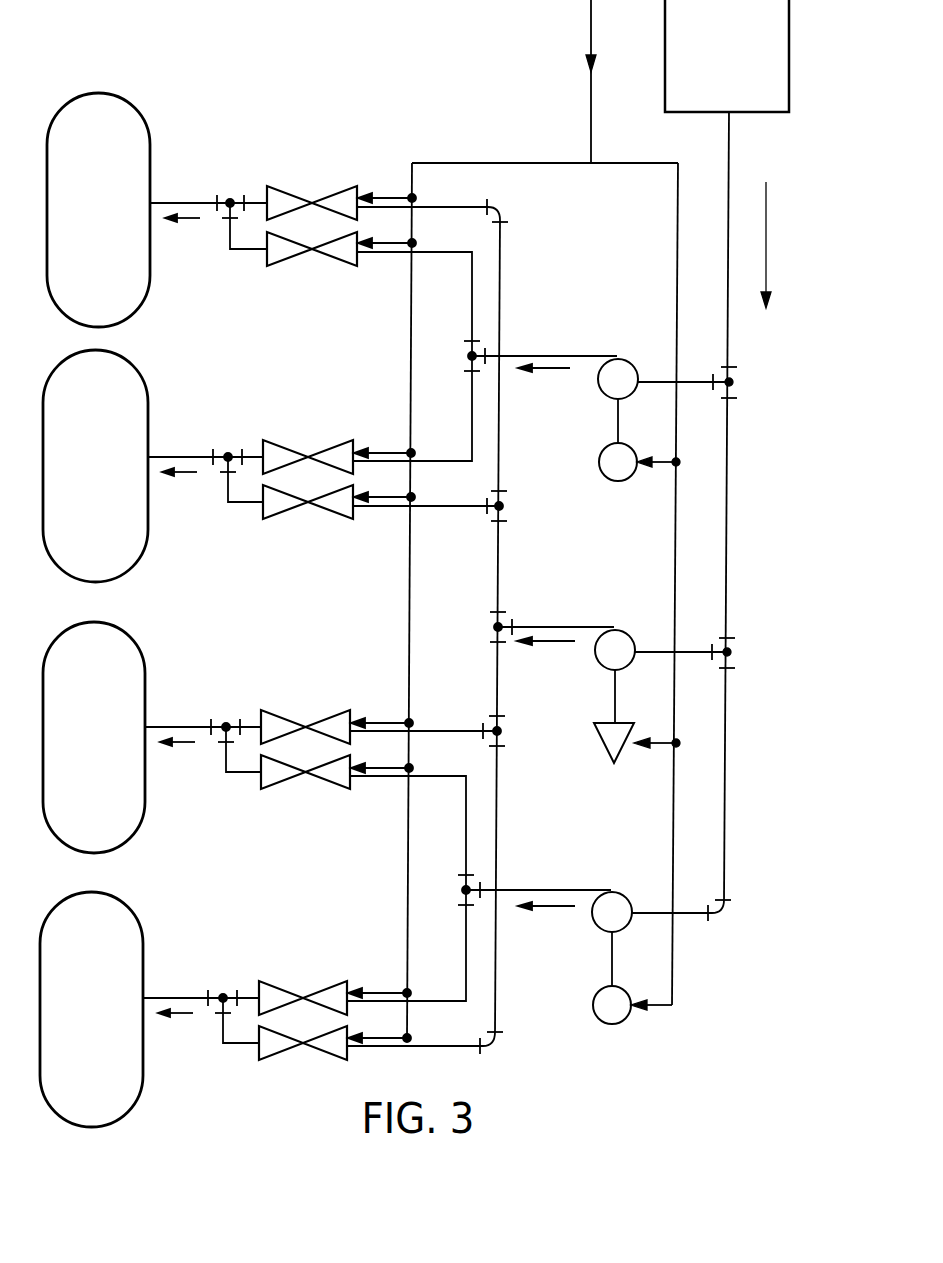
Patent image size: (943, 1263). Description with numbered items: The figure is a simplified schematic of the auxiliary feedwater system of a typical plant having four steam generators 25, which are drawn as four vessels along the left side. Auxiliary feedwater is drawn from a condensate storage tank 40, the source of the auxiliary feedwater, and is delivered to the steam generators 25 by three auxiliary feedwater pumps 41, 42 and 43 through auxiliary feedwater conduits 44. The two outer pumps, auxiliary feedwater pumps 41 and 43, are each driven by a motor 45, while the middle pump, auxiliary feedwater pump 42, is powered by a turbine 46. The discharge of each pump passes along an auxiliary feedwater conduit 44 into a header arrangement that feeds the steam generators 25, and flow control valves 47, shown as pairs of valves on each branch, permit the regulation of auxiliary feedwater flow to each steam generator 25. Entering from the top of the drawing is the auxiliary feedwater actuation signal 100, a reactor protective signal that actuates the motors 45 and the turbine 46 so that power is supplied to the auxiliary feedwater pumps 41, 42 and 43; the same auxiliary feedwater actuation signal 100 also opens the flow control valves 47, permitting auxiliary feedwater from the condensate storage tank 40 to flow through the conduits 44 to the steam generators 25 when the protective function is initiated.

The steam generator 25 is at (142, 112).
The condensate storage tank 40 is at (683, 113).
The auxiliary feedwater pump 41 is at (608, 393).
The auxiliary feedwater pump 42 is at (596, 653).
The auxiliary feedwater pump 43 is at (601, 929).
The auxiliary feedwater conduit 44 is at (580, 356).
The motor 45 is at (600, 473).
The turbine 46 is at (598, 742).
The flow control valve 47 is at (313, 247).
The auxiliary feedwater actuation signal 100 is at (594, 40).